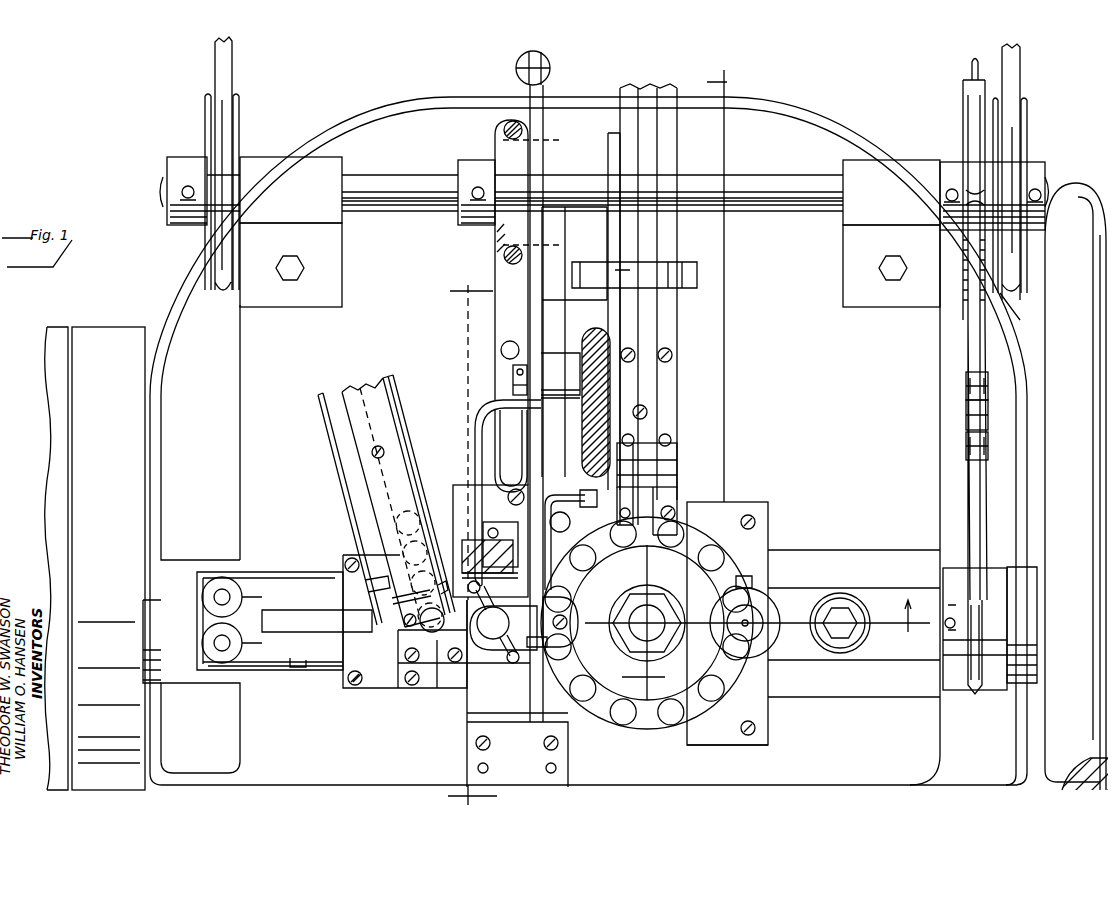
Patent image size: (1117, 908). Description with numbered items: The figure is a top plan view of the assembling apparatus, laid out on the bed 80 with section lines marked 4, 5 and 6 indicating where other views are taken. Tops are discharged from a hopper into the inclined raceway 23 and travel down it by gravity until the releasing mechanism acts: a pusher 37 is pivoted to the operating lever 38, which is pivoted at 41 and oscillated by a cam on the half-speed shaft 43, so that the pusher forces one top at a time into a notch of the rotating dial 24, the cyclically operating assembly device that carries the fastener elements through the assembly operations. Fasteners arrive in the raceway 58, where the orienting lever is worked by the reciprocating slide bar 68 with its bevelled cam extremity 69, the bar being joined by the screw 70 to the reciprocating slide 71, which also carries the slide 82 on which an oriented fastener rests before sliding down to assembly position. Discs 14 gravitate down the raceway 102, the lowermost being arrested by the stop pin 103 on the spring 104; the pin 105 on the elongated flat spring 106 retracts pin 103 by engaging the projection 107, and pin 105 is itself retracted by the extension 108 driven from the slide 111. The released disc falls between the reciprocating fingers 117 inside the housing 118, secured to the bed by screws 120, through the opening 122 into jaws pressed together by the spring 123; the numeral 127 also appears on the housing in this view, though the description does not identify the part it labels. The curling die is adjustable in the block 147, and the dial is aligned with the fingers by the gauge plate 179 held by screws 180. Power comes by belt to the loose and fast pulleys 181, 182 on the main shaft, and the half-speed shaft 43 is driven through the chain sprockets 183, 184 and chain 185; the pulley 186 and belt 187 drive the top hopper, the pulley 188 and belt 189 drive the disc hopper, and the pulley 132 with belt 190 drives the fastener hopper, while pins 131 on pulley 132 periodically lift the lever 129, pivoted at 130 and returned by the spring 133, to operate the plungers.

The bed 80 is at (852, 776).
The half-speed shaft 43 is at (424, 178).
The belt 189 is at (231, 58).
The pulley 188 is at (239, 118).
The belt 187 is at (1021, 66).
The pulley 186 is at (1028, 126).
The chain sprocket 184 is at (977, 322).
The chain sprocket 183 is at (972, 692).
The chain 185 is at (984, 462).
The spring 133 is at (552, 59).
The lever 129 is at (543, 97).
The belt 190 is at (512, 121).
The pins 131 is at (541, 191).
The pulley 132 is at (497, 238).
The operating lever 38 is at (614, 222).
The raceway 23 is at (672, 92).
The pivot 41 is at (697, 262).
The slide 71 is at (558, 314).
The screw 70 is at (512, 341).
The pivot 130 is at (516, 385).
The slide bar 68 is at (473, 428).
The slide 82 is at (492, 455).
The bevelled cam extremity 69 is at (477, 492).
The raceway 58 is at (490, 570).
The pusher 37 is at (653, 445).
The rotating dial 24 is at (622, 722).
The block 147 is at (848, 556).
The screws 180 is at (745, 736).
The gauge plate 179 is at (758, 745).
The opening 122 is at (477, 622).
The housing 118 is at (376, 690).
The screws 120 is at (412, 688).
The screws 127 is at (404, 660).
The fingers 117 is at (266, 578).
The extension 108 is at (325, 631).
The spring 123 is at (263, 669).
The slide 111 is at (298, 668).
The loose pulley 181 is at (56, 330).
The fast pulley 182 is at (103, 330).
The flat spring 106 is at (332, 455).
The raceway 102 is at (400, 443).
The spring 104 is at (425, 483).
The disc 14 is at (427, 520).
The pin 105 is at (378, 590).
The projection 107 is at (402, 612).
The stop pin 103 is at (446, 592).
The section line 4- 4 is at (467, 545).
The section line 5- 5 is at (675, 646).
The section line 6- 6 is at (697, 378).